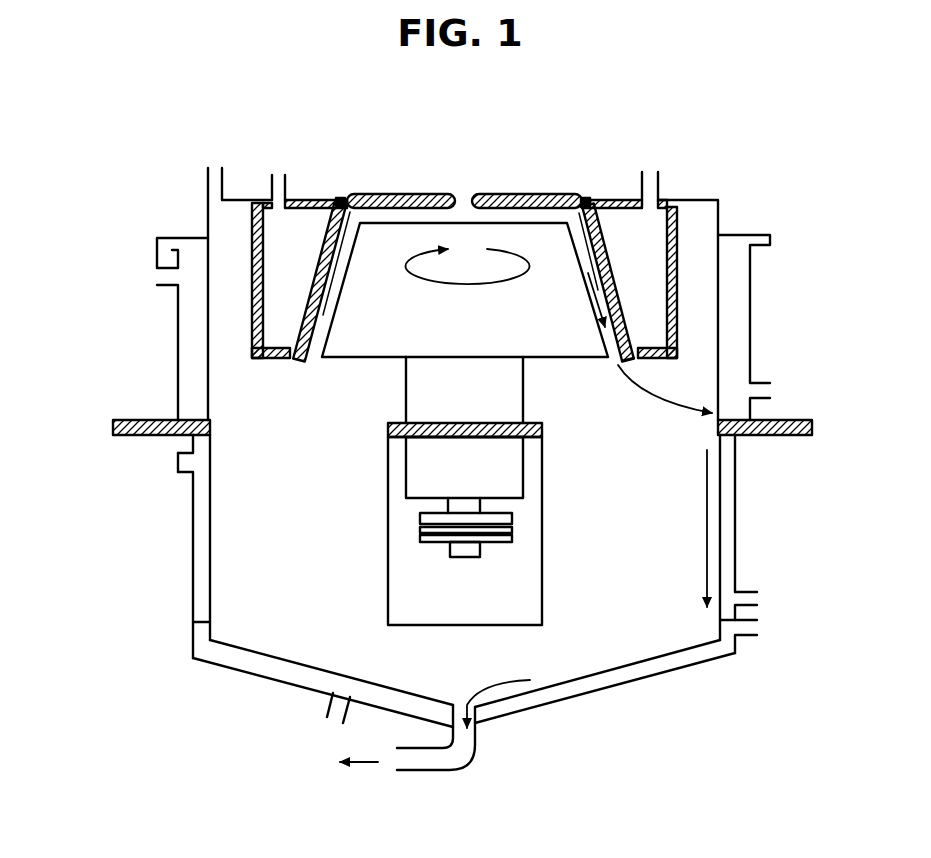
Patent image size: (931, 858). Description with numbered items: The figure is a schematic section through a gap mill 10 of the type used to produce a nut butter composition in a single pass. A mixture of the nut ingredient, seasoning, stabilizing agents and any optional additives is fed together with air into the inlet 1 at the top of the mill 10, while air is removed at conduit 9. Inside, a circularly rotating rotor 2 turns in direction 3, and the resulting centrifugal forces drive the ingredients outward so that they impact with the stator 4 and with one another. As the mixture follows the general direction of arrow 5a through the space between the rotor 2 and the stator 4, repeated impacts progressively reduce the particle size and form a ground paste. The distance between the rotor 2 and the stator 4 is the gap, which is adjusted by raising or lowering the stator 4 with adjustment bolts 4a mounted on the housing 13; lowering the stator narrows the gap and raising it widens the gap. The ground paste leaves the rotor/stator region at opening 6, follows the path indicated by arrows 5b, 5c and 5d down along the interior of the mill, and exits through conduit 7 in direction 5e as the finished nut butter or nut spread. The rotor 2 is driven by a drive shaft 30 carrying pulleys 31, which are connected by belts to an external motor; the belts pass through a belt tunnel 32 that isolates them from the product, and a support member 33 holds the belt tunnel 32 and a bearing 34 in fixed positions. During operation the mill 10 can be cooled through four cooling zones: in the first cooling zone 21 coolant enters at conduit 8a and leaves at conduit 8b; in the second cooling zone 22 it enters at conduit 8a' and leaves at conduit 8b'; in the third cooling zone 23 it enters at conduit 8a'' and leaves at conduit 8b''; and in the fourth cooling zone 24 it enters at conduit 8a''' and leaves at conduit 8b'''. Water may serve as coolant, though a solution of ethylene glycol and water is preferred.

The inlet 1 is at (465, 195).
The rotor 2 is at (465, 323).
The direction of rotation 3 is at (432, 281).
The stator 4 is at (300, 366).
The adjustment bolts 4a is at (340, 197).
The flow direction arrow 5a is at (590, 300).
The path arrow 5b is at (648, 393).
The path arrow 5c is at (708, 535).
The path arrow 5d is at (510, 680).
The exit direction 5e is at (368, 762).
The opening 6 is at (612, 362).
The conduit 7 is at (455, 765).
The conduit 8a is at (309, 156).
The conduit 8b is at (678, 155).
The conduit 8a' is at (784, 327).
The conduit 8b' is at (154, 329).
The conduit 8a'' is at (786, 581).
The conduit 8b'' is at (142, 486).
The conduit 8a''' is at (293, 709).
The conduit 8b''' is at (789, 657).
The conduit 9 is at (208, 188).
The mill 10 is at (462, 475).
The housing 13 is at (282, 360).
The first cooling zone 21 is at (464, 279).
The second cooling zone 22 is at (462, 294).
The third cooling zone 23 is at (195, 590).
The fourth cooling zone 24 is at (238, 665).
The drive shaft 30 is at (462, 557).
The pulleys 31 is at (420, 538).
The belt tunnel 32 is at (542, 478).
The support member 33 is at (388, 427).
The bearing 34 is at (464, 475).